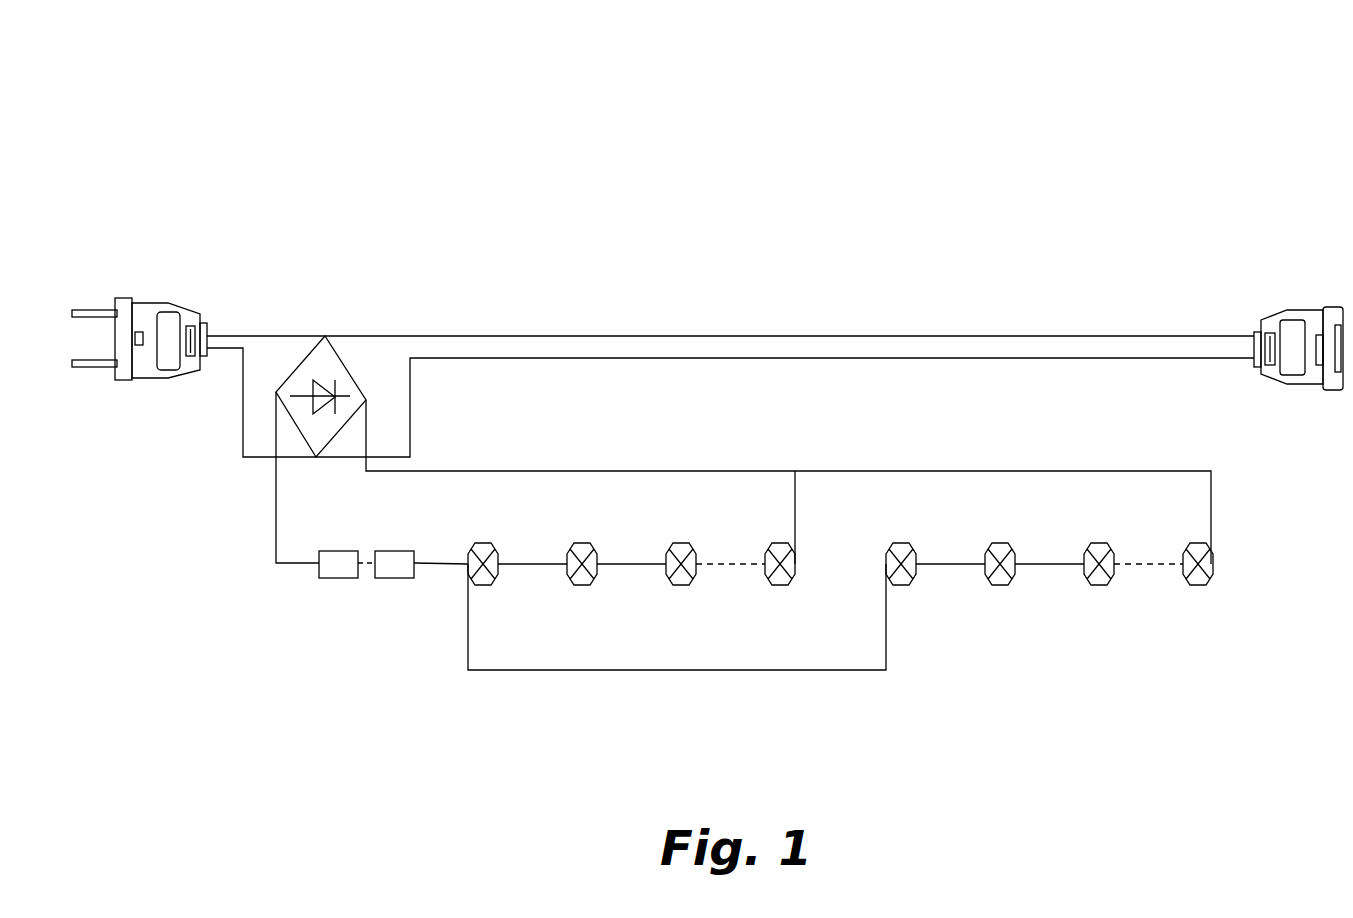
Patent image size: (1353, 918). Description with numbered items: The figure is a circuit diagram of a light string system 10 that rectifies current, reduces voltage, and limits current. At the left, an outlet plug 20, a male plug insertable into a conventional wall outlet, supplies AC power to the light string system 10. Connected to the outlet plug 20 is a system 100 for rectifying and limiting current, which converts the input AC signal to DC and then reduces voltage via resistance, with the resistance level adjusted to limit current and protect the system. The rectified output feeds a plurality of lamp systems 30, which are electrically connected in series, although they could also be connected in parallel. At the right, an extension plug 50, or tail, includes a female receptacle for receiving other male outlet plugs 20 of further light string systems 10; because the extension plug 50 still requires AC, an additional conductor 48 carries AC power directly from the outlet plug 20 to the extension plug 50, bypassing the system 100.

The light string system 10 is at (657, 147).
The outlet plug 20 is at (168, 335).
The additional conductor 48 is at (595, 336).
The system for rectifying and limiting current 100 is at (337, 368).
The lamp systems 30 is at (585, 583).
The extension plug 50 is at (1297, 337).